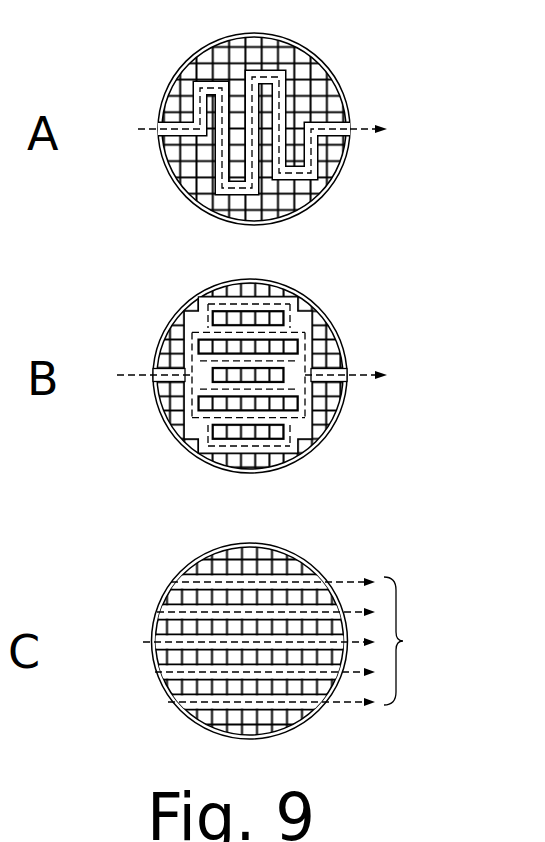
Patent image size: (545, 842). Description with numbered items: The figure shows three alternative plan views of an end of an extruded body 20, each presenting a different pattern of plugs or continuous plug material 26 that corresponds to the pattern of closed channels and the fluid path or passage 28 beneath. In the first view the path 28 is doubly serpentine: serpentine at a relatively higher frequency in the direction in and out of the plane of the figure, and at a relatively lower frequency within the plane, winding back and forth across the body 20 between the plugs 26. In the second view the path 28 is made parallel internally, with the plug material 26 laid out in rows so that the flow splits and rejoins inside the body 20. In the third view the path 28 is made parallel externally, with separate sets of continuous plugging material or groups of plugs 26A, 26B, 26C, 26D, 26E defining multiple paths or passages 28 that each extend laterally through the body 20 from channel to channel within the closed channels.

In FIG. 9A, the extruded body 20 is at (183, 194).
In FIG. 9B, the extruded body 20 is at (312, 303).
In FIG. 9C, the extruded body 20 is at (208, 736).
In FIG. 9A, the plugs or continuous plug material 26 is at (158, 129).
In FIG. 9B, the plugs or continuous plug material 26 is at (334, 372).
In FIG. 9C, the continuous plugging material or group of plugs 26A is at (171, 584).
In FIG. 9C, the continuous plugging material or group of plugs 26B is at (158, 613).
In FIG. 9C, the continuous plugging material or group of plugs 26C is at (150, 643).
In FIG. 9C, the continuous plugging material or group of plugs 26D is at (160, 674).
In FIG. 9C, the continuous plugging material or group of plugs 26E is at (170, 703).
In FIG. 9A, the fluid path or passage 28 is at (355, 128).
In FIG. 9B, the fluid path or passage 28 is at (353, 378).
In FIG. 9C, the fluid path or passage 28 is at (411, 641).